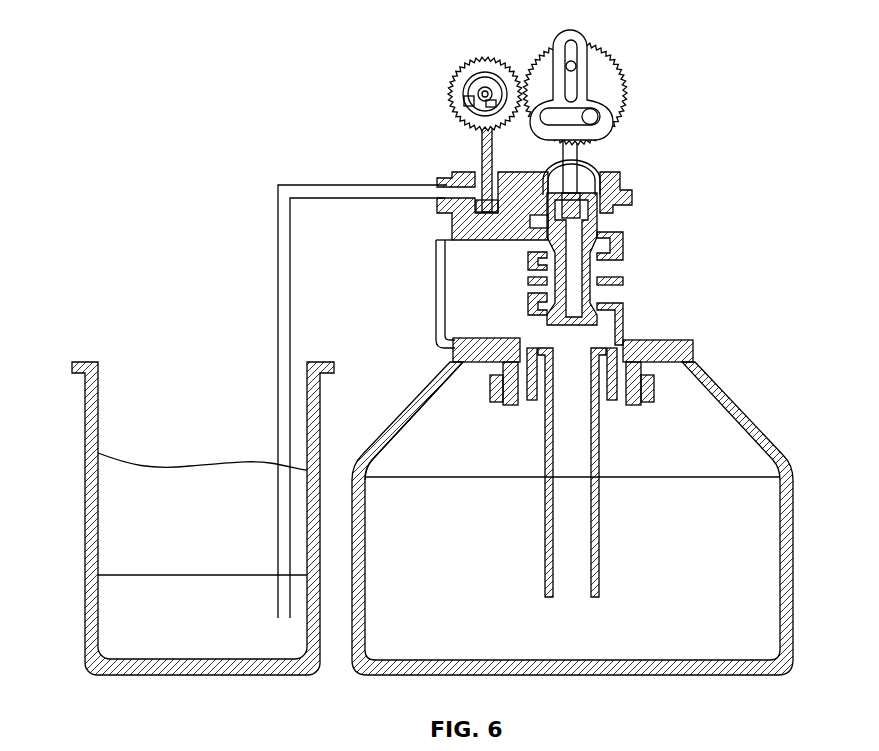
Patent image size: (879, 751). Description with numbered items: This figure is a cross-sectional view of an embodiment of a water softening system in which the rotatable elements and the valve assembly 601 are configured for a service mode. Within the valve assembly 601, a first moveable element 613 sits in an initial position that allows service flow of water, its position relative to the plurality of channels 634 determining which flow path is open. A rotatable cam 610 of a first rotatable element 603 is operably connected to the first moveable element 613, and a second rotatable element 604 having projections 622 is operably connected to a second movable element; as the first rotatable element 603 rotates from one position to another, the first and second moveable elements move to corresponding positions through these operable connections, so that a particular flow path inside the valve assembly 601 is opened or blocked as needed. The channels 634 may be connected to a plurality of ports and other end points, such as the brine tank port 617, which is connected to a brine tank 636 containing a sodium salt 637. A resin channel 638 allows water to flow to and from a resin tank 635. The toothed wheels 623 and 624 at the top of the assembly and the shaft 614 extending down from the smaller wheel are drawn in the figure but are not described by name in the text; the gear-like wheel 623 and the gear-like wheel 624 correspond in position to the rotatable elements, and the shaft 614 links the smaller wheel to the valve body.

The valve assembly 601 is at (529, 209).
The first rotatable element 603 is at (610, 95).
The second rotatable element 604 is at (465, 94).
The rotatable cam 610 is at (595, 112).
The first moveable element 613 is at (600, 93).
The shaft 614 is at (480, 148).
The brine tank port 617 is at (447, 195).
The projections 622 is at (470, 110).
The gear 623 is at (609, 79).
The gear 624 is at (430, 88).
The plurality of channels 634 is at (622, 222).
The resin tank 635 is at (793, 507).
The brine tank 636 is at (85, 615).
The sodium salt 637 is at (113, 523).
The resin channel 638 is at (600, 460).